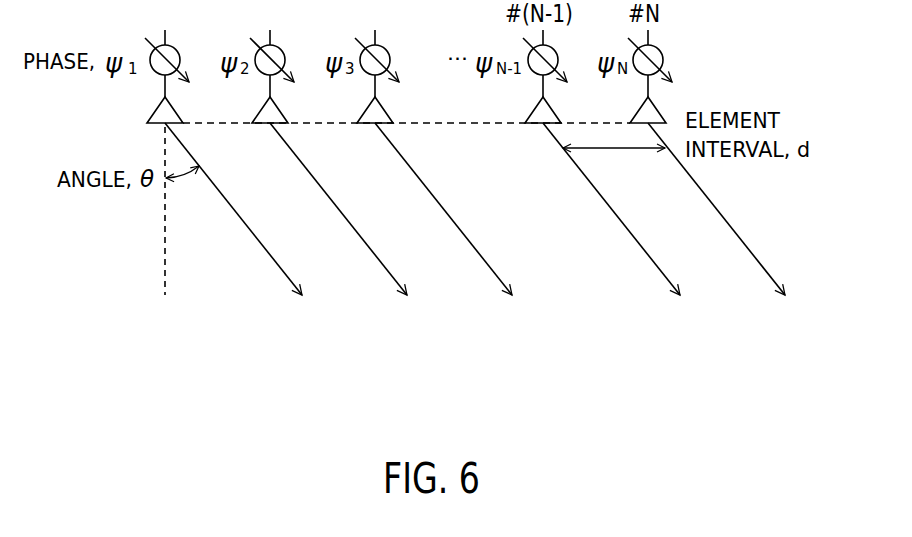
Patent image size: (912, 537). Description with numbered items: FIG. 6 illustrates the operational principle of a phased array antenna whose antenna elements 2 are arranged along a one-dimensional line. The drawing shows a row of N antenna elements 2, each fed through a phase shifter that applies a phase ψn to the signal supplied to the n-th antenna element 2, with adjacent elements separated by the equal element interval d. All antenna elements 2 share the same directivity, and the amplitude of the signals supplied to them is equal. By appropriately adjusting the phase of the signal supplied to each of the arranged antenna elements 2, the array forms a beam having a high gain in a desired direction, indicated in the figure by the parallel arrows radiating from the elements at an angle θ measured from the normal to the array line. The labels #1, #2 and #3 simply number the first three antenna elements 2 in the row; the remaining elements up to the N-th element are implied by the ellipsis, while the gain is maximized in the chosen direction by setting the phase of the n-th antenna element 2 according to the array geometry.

The antenna element #1 with phase shifter 1 is at (223, 147).
The antenna element 2 is at (328, 147).
The antenna element #3 with phase shifter 3 is at (433, 147).